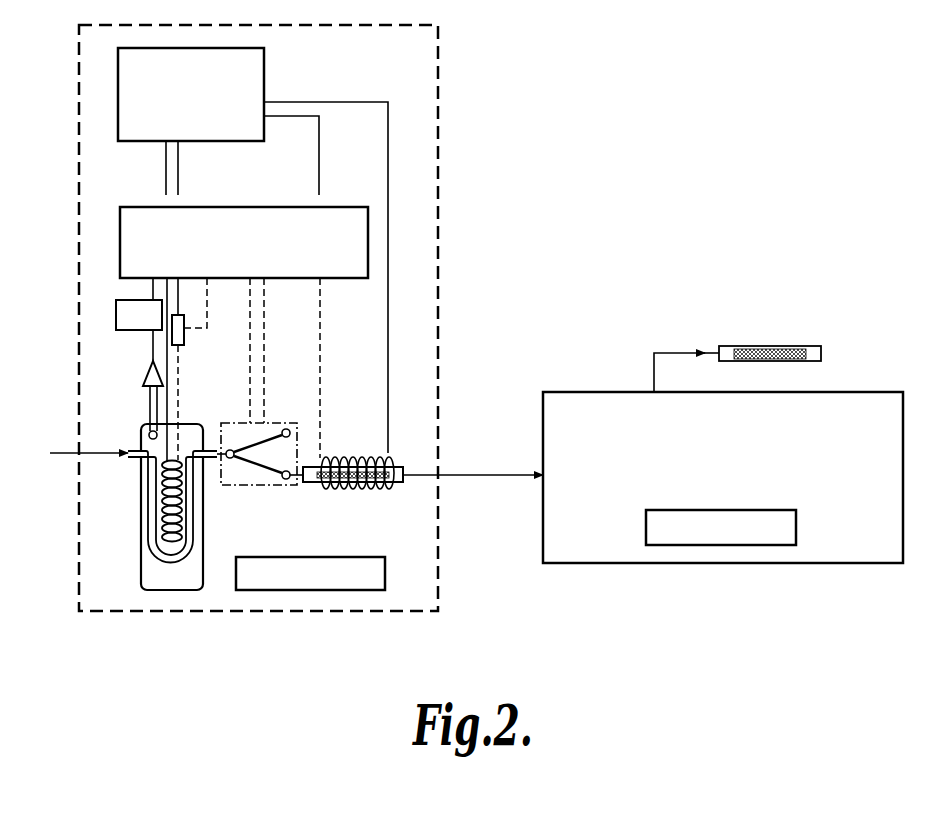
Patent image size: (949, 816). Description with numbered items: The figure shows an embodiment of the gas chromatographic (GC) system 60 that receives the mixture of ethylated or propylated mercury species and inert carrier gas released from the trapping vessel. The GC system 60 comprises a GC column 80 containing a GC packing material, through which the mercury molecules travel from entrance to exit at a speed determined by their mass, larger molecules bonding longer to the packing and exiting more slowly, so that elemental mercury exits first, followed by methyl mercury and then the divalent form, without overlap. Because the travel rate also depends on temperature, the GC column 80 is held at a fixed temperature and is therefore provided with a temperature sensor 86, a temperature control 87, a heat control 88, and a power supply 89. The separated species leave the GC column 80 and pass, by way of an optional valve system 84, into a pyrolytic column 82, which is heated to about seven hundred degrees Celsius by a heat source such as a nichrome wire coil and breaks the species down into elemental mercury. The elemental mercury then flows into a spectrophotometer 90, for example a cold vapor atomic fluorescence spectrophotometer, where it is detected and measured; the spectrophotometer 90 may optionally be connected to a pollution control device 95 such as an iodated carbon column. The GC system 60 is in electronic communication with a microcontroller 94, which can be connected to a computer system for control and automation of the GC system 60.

The gas chromatographic system 60 is at (187, 620).
The GC column 80 is at (145, 530).
The pyrolytic column 82 is at (349, 453).
The valve system 84 is at (278, 422).
The temperature sensor 86 is at (147, 375).
The temperature control 87 is at (119, 299).
The heat control 88 is at (184, 339).
The power supply 89 is at (265, 67).
The spectrophotometer 90 is at (603, 391).
The microcontroller 94 is at (340, 207).
The pollution control device 95 is at (807, 345).